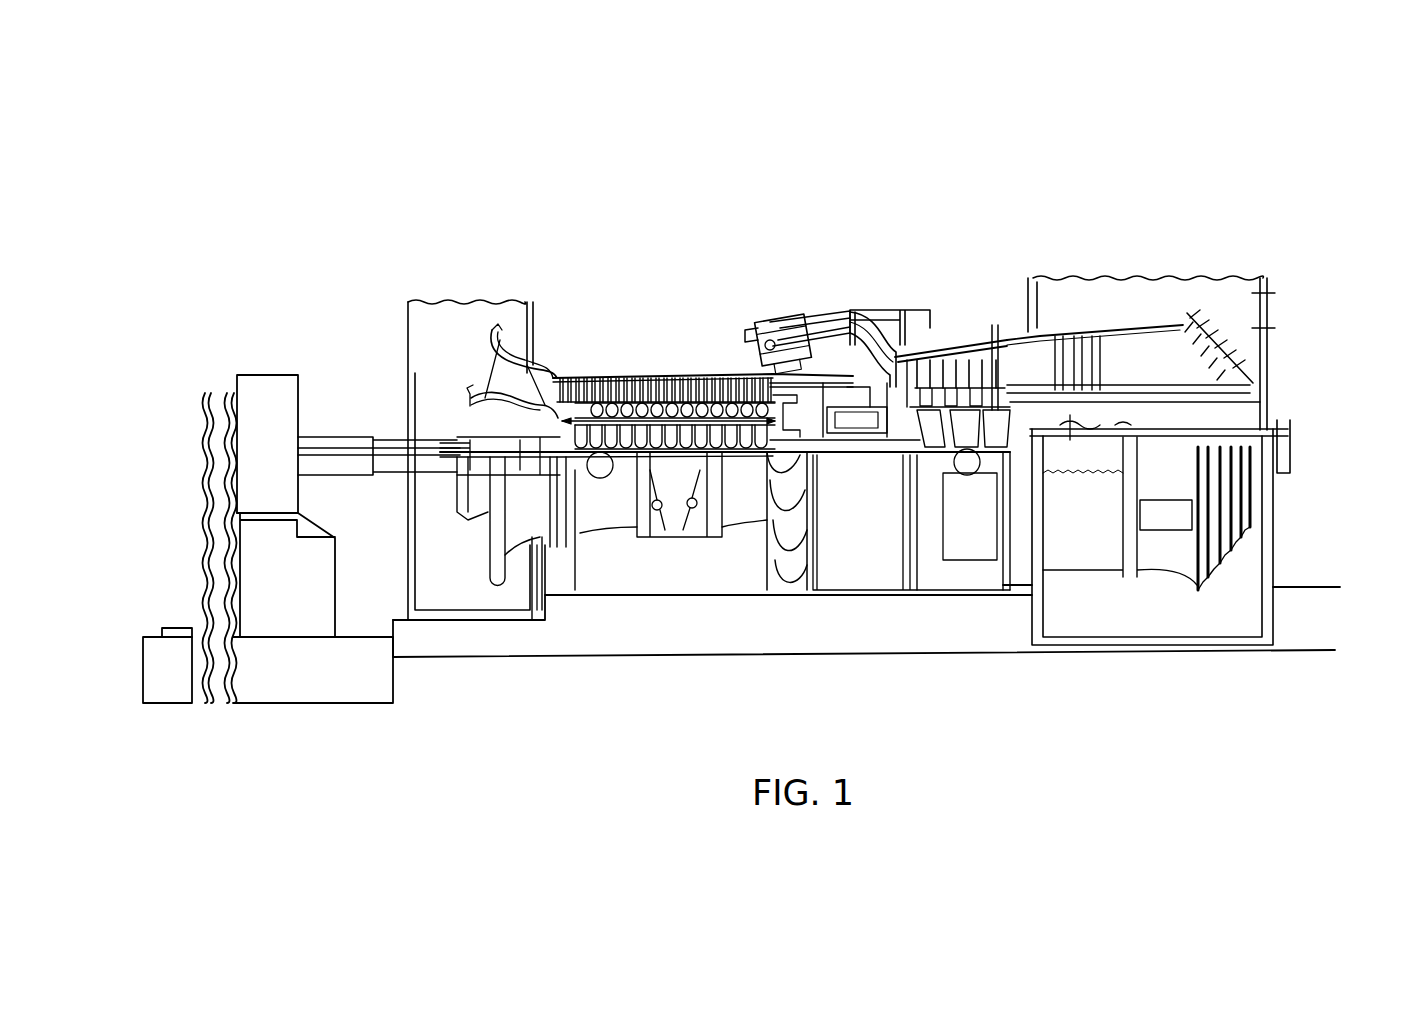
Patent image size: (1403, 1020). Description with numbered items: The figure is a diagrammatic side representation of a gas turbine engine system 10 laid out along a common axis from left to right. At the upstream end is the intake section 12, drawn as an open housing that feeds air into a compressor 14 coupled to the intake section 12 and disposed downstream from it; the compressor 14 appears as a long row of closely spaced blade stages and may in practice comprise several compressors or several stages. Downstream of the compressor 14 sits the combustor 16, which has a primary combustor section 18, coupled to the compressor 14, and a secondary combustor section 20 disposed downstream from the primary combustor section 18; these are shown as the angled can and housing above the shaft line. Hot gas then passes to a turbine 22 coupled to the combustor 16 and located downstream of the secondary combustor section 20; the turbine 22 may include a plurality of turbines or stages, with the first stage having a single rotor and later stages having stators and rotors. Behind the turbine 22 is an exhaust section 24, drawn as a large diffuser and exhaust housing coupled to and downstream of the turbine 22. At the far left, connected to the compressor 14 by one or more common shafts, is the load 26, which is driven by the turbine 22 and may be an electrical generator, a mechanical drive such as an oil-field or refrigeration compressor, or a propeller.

The gas turbine engine system 10 is at (1266, 124).
The intake section 12 is at (475, 302).
The compressor 14 is at (672, 378).
The combustor 16 is at (827, 303).
The primary combustor section 18 is at (792, 307).
The secondary combustor section 20 is at (893, 308).
The turbine 22 is at (973, 340).
The exhaust section 24 is at (1152, 330).
The load 26 is at (257, 375).